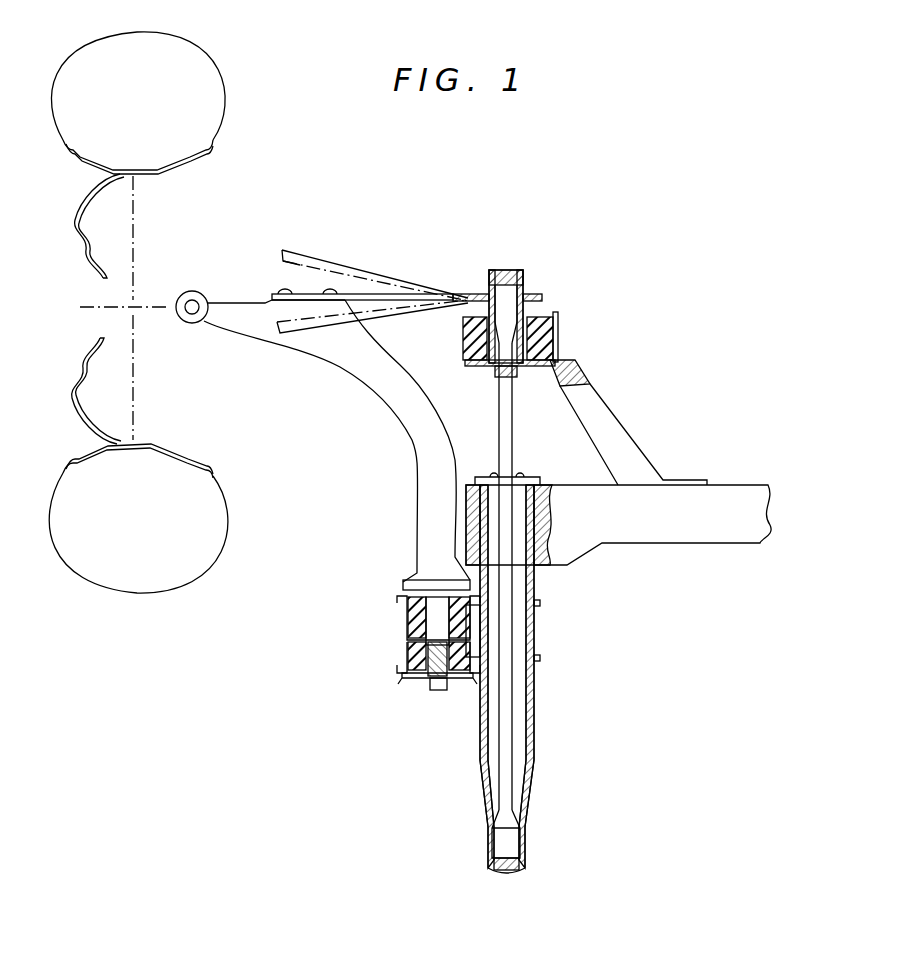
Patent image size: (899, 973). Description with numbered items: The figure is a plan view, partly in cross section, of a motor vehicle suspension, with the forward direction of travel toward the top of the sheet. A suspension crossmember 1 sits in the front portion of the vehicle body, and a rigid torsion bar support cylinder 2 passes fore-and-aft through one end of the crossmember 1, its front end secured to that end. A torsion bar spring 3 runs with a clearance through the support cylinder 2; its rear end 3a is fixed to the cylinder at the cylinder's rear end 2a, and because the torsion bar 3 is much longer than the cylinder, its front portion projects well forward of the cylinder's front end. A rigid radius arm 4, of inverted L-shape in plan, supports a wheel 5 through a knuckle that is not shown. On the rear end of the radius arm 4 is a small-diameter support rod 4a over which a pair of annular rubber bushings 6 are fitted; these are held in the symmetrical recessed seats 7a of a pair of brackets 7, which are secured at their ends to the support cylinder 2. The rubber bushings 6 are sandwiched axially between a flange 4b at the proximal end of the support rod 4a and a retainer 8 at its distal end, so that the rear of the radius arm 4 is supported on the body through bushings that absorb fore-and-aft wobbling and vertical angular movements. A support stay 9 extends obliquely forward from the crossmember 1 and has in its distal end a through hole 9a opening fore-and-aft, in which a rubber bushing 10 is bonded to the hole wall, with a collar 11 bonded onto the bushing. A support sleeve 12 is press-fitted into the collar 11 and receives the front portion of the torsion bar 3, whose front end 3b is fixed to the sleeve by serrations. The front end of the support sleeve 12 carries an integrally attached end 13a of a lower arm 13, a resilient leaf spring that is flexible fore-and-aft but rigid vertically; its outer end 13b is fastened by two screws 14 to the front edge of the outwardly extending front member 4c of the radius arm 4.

The suspension crossmember 1 is at (737, 497).
The torsion bar support cylinder 2 is at (535, 705).
The rear end of support cylinder 2a is at (525, 845).
The torsion bar spring 3 is at (507, 620).
The rear end of torsion bar 3a is at (503, 842).
The front end of torsion bar 3b is at (498, 295).
The radius arm 4 is at (400, 415).
The support rod 4a is at (437, 623).
The flange 4b is at (437, 590).
The front member of radius arm 4c is at (222, 328).
The wheel 5 is at (180, 580).
The annular rubber bushings 6 is at (410, 596).
The brackets 7 is at (540, 603).
The recessed seats 7a is at (407, 612).
The retainer 8 is at (418, 675).
The support stay 9 is at (612, 437).
The through hole 9a is at (556, 335).
The rubber bushing 10 is at (548, 325).
The collar 11 is at (462, 338).
The support sleeve 12 is at (521, 288).
The lower arm 13 is at (400, 296).
The inner end of lower arm 13a is at (483, 296).
The outer end of lower arm 13b is at (302, 301).
The screws 14 is at (330, 290).